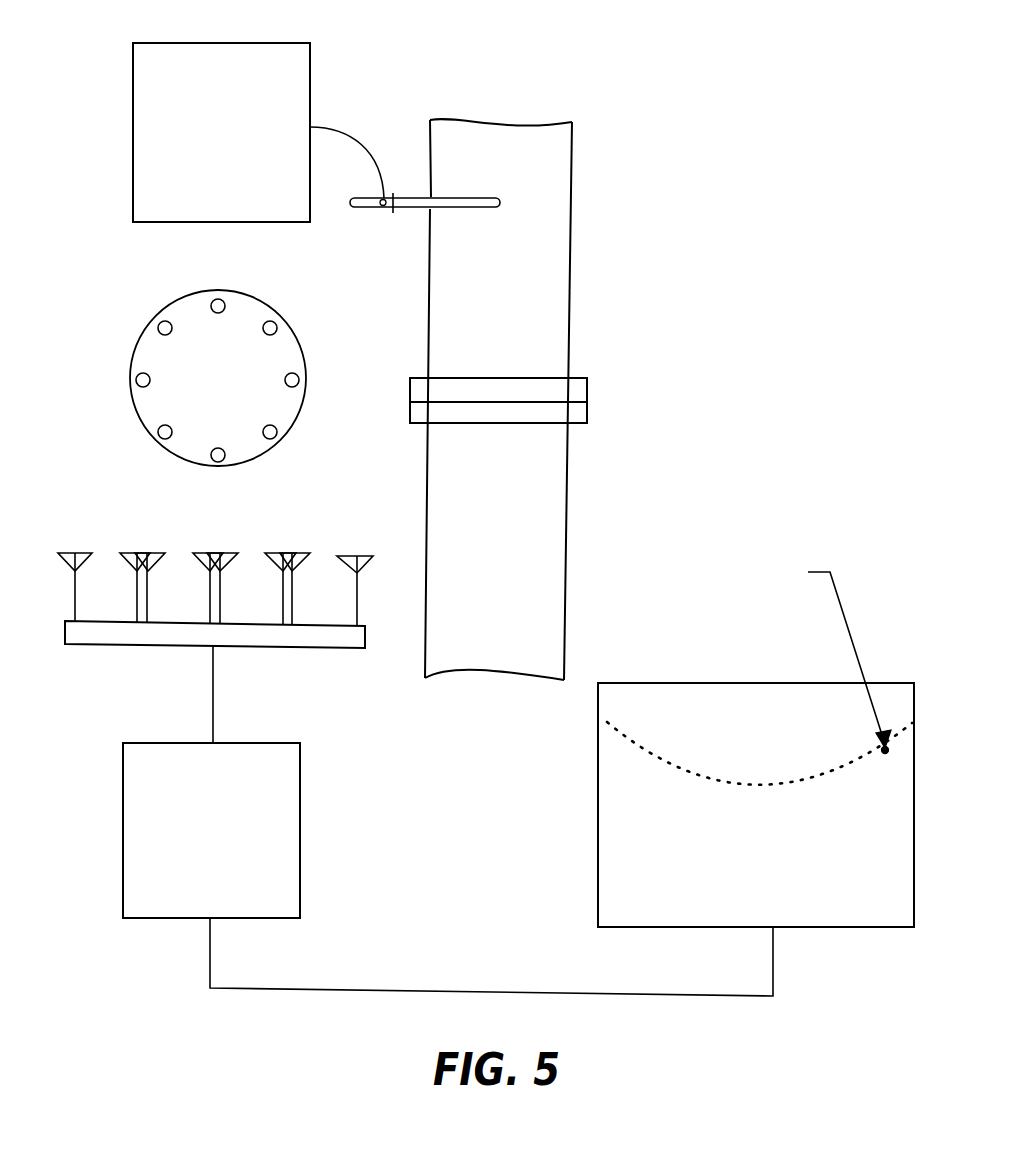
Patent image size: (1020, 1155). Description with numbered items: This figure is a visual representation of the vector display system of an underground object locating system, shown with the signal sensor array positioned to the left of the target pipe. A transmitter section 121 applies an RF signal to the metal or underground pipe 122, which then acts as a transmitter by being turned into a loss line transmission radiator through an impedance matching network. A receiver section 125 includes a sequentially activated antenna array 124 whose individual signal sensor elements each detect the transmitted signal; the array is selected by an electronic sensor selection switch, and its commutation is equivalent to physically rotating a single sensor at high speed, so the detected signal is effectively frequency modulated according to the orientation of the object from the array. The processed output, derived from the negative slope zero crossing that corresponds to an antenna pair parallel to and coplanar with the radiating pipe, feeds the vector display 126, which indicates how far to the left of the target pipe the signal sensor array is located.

The transmitter section 121 is at (222, 43).
The target pipe 122 is at (572, 197).
The antenna array 124 is at (252, 300).
The receiver section 125 is at (300, 833).
The vector display 126 is at (733, 683).